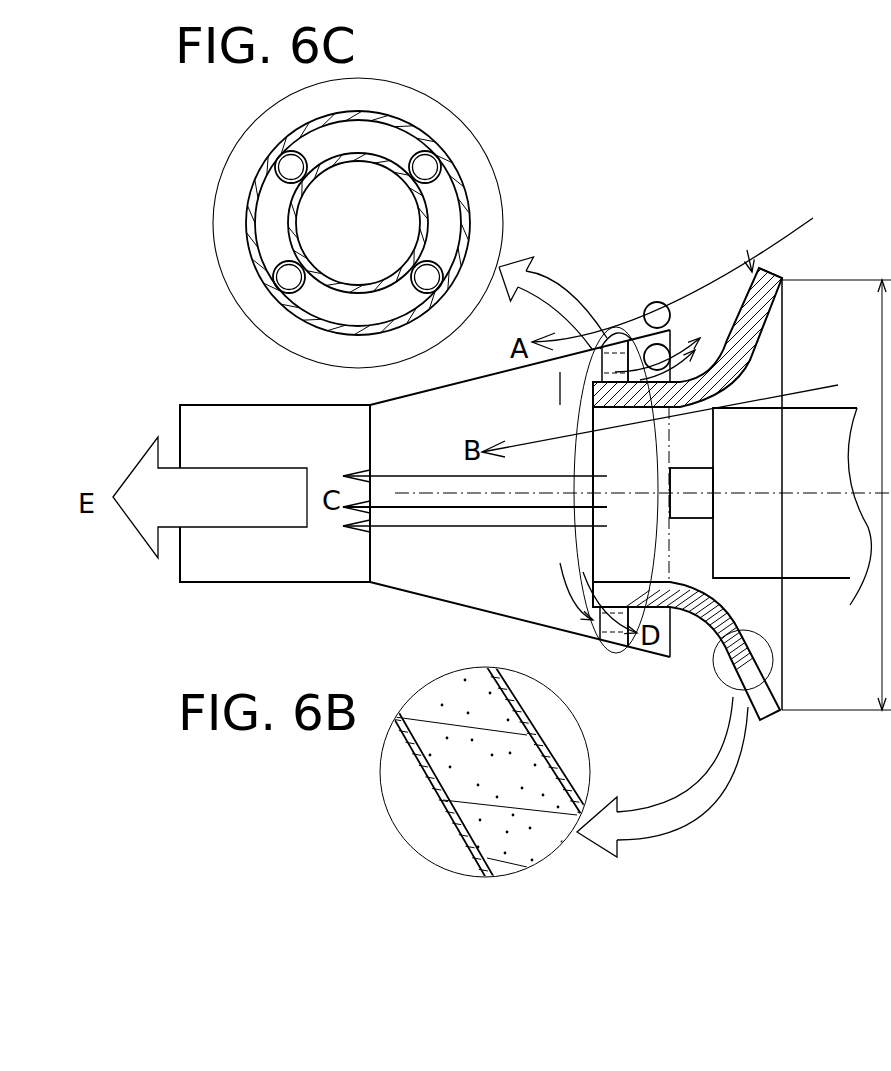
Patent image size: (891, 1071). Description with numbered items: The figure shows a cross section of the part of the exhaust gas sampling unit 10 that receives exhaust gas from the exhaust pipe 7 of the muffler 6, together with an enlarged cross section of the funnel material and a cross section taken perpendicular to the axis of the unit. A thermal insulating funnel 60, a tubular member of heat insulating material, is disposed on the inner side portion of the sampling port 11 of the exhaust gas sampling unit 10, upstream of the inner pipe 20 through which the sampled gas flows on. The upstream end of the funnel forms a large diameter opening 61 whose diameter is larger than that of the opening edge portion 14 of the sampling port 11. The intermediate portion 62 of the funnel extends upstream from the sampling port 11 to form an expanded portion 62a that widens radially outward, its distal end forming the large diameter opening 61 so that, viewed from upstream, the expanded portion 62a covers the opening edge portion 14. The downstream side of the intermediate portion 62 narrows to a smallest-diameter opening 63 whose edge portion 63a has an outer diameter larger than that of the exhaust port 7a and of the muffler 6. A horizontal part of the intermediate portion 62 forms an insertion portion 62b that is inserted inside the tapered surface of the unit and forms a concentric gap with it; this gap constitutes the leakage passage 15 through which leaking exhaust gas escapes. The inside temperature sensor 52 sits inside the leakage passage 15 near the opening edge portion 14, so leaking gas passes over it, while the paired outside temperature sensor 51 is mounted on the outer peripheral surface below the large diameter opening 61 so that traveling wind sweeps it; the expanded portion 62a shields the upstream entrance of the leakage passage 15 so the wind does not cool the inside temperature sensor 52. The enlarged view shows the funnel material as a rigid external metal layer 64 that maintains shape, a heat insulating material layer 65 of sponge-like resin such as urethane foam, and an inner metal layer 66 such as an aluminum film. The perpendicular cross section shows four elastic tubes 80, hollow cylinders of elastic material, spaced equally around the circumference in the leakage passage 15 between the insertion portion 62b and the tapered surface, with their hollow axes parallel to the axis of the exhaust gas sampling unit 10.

In FIG. 6B, the muffler 6 is at (827, 567).
In FIG. 6B, the exhaust pipe 7 is at (692, 508).
In FIG. 6B, the exhaust port 7a is at (667, 497).
In FIG. 6C, the exhaust gas sampling unit 10 is at (312, 126).
In FIG. 6B, the exhaust gas sampling unit 10 is at (402, 592).
In FIG. 6B, the sampling port 11 is at (665, 630).
In FIG. 6B, the opening edge portion 14 is at (667, 346).
In FIG. 6B, the leakage passage 15 is at (607, 340).
In FIG. 6B, the inner pipe 20 is at (212, 404).
In FIG. 6B, the outside temperature sensor 51 is at (657, 302).
In FIG. 6B, the inside temperature sensor 52 is at (646, 344).
In FIG. 6B, the thermal insulating funnel 60 is at (747, 250).
In FIG. 6B, the large diameter opening 61 is at (785, 262).
In FIG. 6B, the intermediate portion 62 is at (718, 385).
In FIG. 6B, the expanded portion 62a is at (772, 310).
In FIG. 6C, the insertion portion 62b is at (302, 250).
In FIG. 6B, the insertion portion 62b is at (592, 417).
In FIG. 6B, the smallest-diameter opening 63 is at (593, 540).
In FIG. 6B, the edge portion 63a is at (563, 406).
In FIG. 6B, the external metal layer 64 is at (405, 762).
In FIG. 6B, the heat insulating material layer 65 is at (492, 712).
In FIG. 6B, the inner metal layer 66 is at (567, 768).
In FIG. 6C, the elastic tube 80 is at (412, 176).
In FIG. 6B, the elastic tube 80 is at (600, 338).